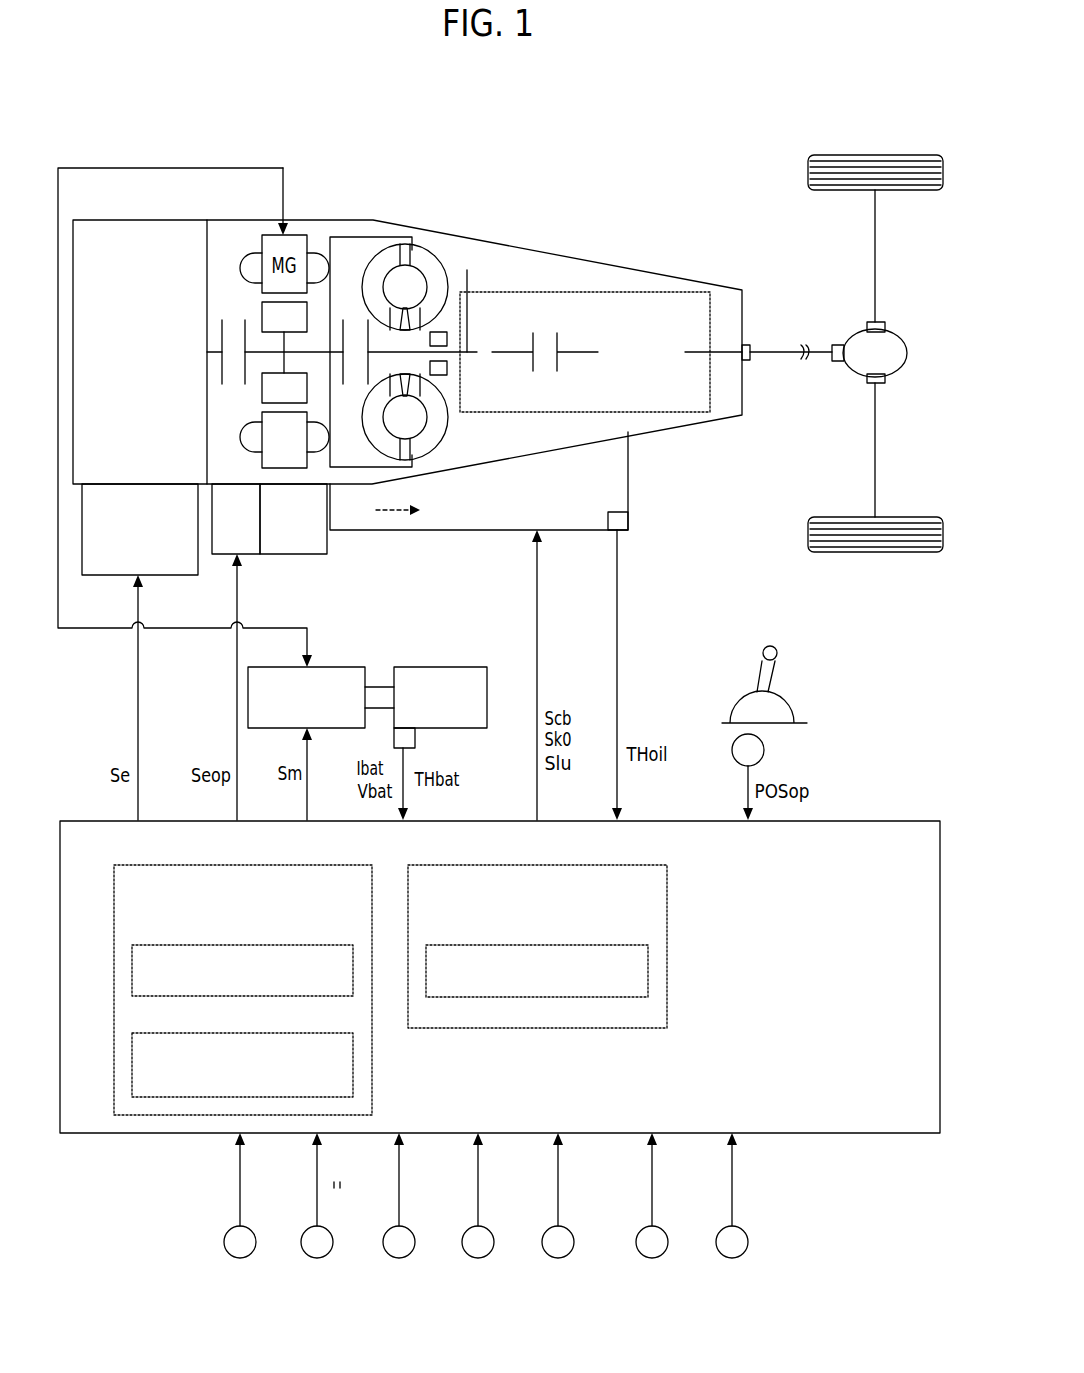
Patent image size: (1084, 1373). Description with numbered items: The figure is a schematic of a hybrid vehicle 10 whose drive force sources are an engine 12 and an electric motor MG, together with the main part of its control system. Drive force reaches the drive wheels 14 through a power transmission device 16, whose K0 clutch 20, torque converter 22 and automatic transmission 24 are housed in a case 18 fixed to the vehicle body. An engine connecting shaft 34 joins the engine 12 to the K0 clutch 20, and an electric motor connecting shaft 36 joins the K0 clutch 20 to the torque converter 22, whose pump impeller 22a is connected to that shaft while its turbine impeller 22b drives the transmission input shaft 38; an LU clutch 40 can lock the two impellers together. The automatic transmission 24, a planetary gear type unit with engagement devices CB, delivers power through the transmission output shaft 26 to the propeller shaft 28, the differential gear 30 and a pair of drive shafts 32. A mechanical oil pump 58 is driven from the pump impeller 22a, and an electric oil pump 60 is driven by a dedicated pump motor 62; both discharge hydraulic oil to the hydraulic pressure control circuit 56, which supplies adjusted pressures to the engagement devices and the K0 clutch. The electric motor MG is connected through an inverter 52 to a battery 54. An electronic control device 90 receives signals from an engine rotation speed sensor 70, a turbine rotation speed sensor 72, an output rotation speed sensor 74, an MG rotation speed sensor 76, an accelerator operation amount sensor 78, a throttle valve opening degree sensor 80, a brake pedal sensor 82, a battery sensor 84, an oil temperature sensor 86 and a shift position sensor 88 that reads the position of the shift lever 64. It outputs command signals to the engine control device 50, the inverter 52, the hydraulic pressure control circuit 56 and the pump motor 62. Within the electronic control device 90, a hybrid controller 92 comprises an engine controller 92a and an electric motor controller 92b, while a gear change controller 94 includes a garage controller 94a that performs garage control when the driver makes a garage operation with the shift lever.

The vehicle 10 is at (690, 108).
The engine 12 is at (112, 240).
The drive wheels 14 is at (815, 176).
The power transmission device 16 is at (459, 160).
The case 18 is at (313, 222).
The K0 clutch 20 is at (222, 362).
The torque converter 22 is at (453, 260).
The pump impeller 22a is at (428, 442).
The turbine impeller 22b is at (375, 428).
The automatic transmission 24 is at (653, 297).
The transmission output shaft 26 is at (687, 352).
The propeller shaft 28 is at (783, 362).
The differential gear 30 is at (890, 333).
The drive shafts 32 is at (876, 258).
The engine connecting shaft 34 is at (213, 352).
The electric motor connecting shaft 36 is at (257, 350).
The transmission input shaft 38 is at (467, 270).
The LU clutch 40 is at (340, 335).
The engine control device 50 is at (177, 568).
The inverter 52 is at (318, 668).
The battery 54 is at (440, 668).
The hydraulic pressure control circuit 56 is at (615, 452).
The MOP 58 is at (440, 377).
The EOP 60 is at (313, 552).
The pump motor 62 is at (247, 552).
The shift lever 64 is at (778, 650).
The engine rotation speed sensor 70 is at (240, 1258).
The turbine rotation speed sensor 72 is at (317, 1258).
The output rotation speed sensor 74 is at (399, 1258).
The MG rotation speed sensor 76 is at (478, 1258).
The accelerator operation amount sensor 78 is at (558, 1258).
The throttle valve opening degree sensor 80 is at (652, 1258).
The brake pedal sensor 82 is at (732, 1258).
The battery sensor 84 is at (417, 740).
The oil temperature sensor 86 is at (628, 522).
The shift position sensor 88 is at (757, 758).
The electronic control device 90 is at (857, 830).
The hybrid controller 92 is at (315, 873).
The engine controller 92a is at (280, 955).
The electric motor controller 92b is at (280, 1043).
The gear change controller 94 is at (608, 875).
The garage controller 94a is at (575, 955).